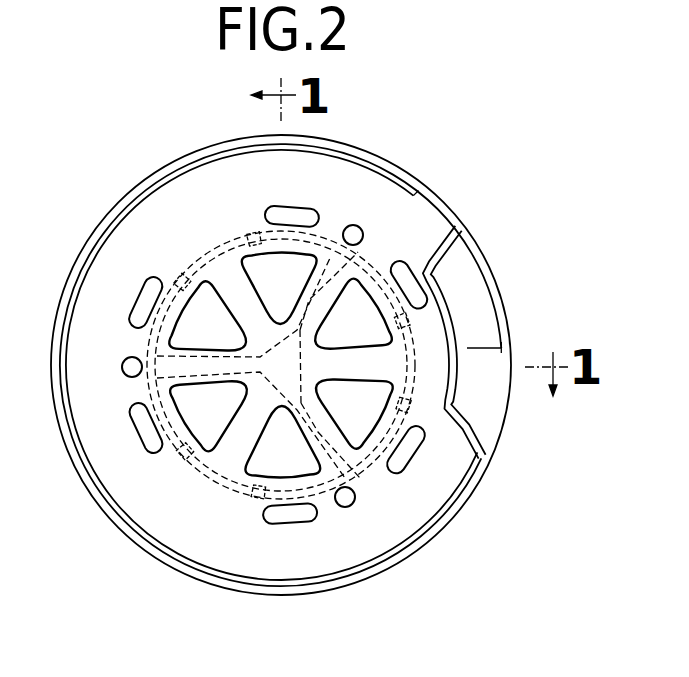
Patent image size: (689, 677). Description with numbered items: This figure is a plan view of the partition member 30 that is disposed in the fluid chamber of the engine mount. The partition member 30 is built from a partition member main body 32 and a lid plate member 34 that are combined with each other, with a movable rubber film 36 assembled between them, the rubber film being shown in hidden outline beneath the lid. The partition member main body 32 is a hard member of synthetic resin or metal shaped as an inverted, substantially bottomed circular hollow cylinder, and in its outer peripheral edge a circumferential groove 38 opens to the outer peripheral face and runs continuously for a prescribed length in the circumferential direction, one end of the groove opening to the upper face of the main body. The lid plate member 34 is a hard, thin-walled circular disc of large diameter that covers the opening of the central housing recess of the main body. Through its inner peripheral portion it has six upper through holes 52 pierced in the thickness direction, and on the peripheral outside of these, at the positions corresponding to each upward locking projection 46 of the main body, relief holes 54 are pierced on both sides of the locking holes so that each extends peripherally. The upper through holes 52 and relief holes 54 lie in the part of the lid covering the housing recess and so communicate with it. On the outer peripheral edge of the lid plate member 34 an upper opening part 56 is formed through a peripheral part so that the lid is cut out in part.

The partition member 30 is at (508, 206).
The partition member main body 32 is at (478, 413).
The lid plate member 34 is at (428, 493).
The movable rubber film 36 is at (198, 252).
The circumferential groove 38 is at (448, 296).
The upper opening part 56 is at (448, 316).
The upper through holes 52 is at (266, 258).
The relief holes 54 is at (304, 216).
The locking projection 46 is at (353, 235).